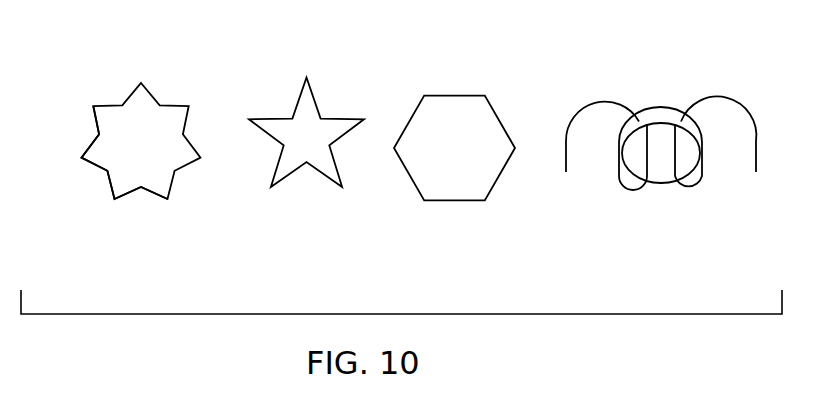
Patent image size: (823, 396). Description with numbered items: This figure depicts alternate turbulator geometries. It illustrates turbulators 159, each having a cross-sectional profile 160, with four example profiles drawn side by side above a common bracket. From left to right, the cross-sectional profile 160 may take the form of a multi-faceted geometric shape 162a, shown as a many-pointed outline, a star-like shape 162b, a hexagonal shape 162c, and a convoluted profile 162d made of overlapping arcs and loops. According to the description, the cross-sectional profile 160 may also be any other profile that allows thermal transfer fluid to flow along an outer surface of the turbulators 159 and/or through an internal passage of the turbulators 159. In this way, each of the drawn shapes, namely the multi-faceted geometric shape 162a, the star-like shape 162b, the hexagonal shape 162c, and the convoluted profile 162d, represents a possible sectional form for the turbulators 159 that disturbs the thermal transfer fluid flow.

The turbulators 159 is at (105, 226).
The cross-sectional profile 160 is at (69, 145).
The multi-faceted geometric shape 162a is at (113, 86).
The star-like shape 162b is at (279, 97).
The hexagonal shape 162c is at (515, 184).
The convoluted profile 162d is at (701, 67).